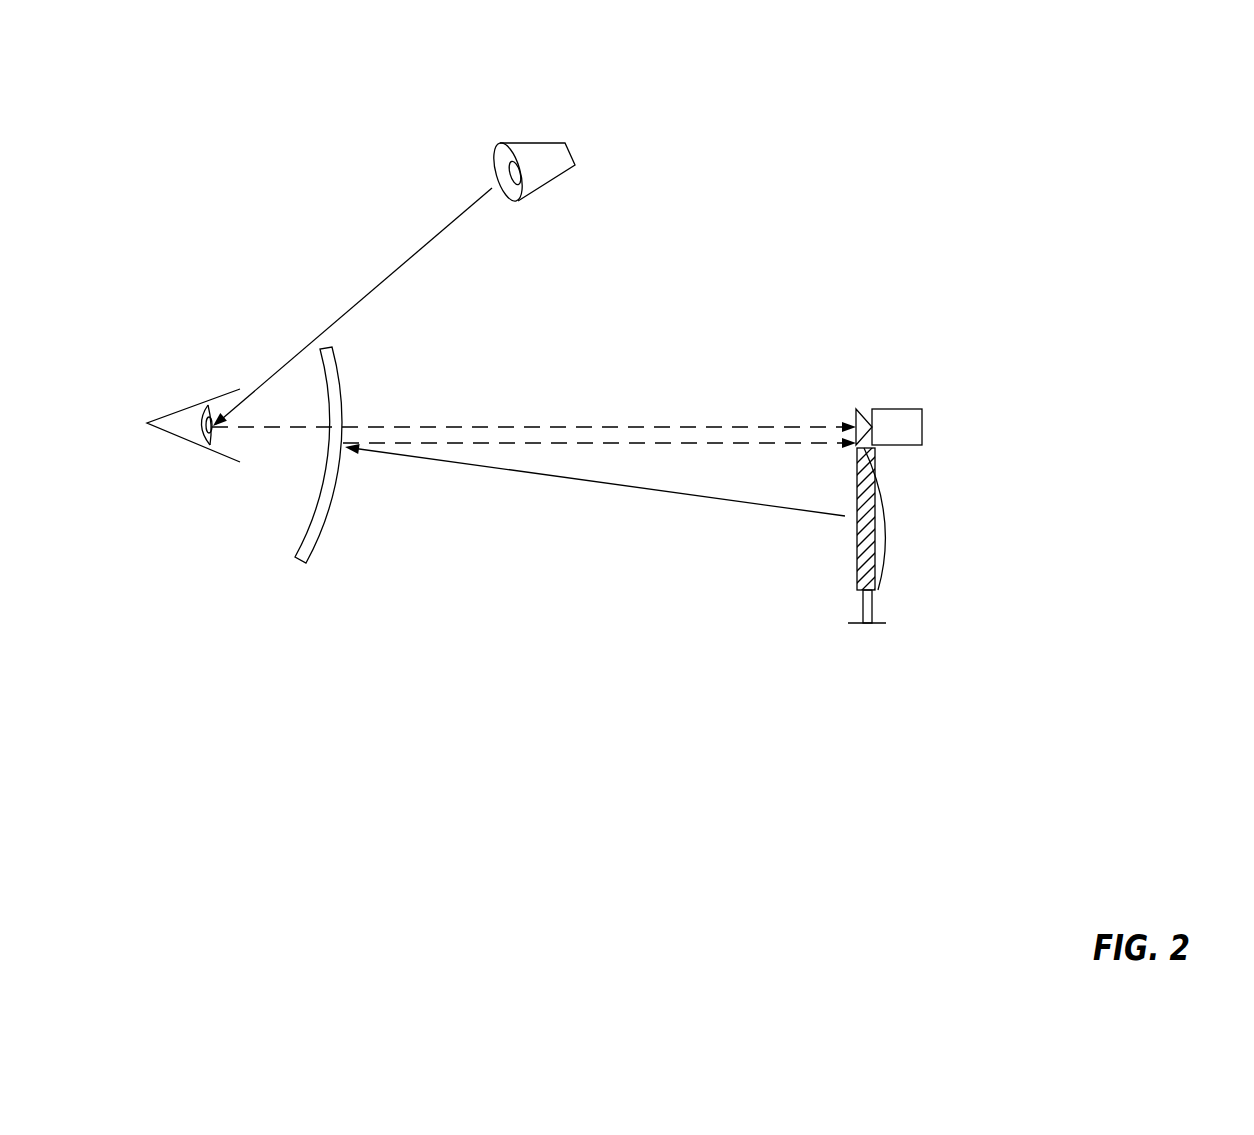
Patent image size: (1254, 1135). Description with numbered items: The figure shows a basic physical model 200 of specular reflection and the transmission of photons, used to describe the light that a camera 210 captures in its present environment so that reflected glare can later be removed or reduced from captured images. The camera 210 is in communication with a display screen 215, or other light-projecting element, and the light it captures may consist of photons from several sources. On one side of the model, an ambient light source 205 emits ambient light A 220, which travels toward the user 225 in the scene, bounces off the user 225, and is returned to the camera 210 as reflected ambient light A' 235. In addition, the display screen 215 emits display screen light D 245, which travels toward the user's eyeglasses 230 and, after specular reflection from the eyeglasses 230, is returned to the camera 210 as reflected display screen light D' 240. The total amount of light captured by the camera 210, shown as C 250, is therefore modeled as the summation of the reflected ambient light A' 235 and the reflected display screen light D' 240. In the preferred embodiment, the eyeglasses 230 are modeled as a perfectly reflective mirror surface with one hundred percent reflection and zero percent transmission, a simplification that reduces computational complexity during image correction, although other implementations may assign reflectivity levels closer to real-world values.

The basic physical model 200 is at (1178, 106).
The ambient light source 205 is at (528, 143).
The camera 210 is at (892, 409).
The display screen 215 is at (887, 560).
The ambient light A 220 is at (400, 265).
The user 225 is at (176, 394).
The eyeglasses 230 is at (355, 389).
The reflected ambient light A' 235 is at (514, 427).
The reflected display screen light D' 240 is at (720, 443).
The display screen light D 245 is at (515, 470).
The total captured light C 250 is at (929, 296).